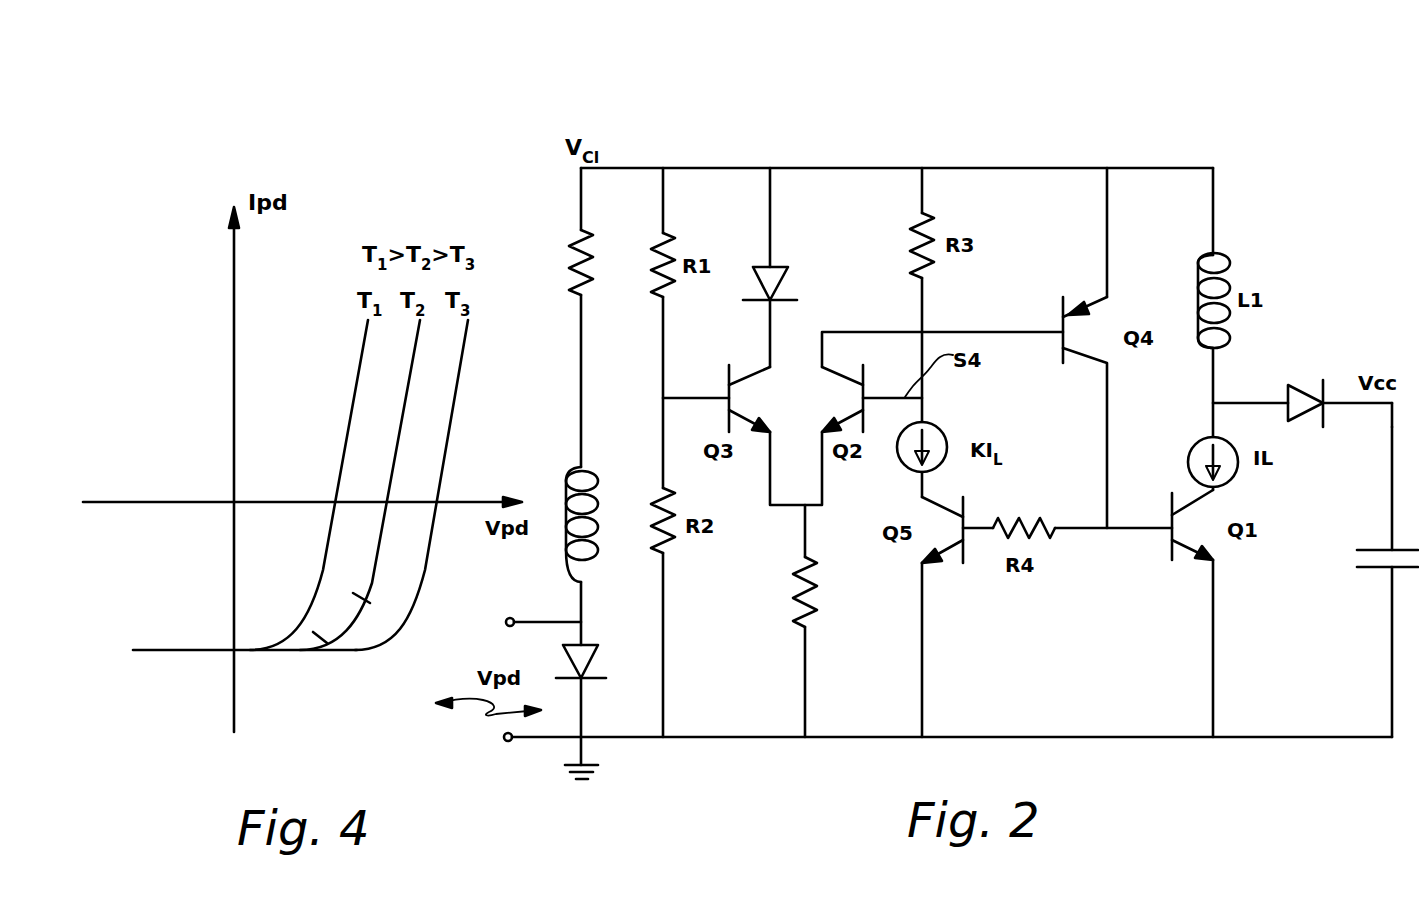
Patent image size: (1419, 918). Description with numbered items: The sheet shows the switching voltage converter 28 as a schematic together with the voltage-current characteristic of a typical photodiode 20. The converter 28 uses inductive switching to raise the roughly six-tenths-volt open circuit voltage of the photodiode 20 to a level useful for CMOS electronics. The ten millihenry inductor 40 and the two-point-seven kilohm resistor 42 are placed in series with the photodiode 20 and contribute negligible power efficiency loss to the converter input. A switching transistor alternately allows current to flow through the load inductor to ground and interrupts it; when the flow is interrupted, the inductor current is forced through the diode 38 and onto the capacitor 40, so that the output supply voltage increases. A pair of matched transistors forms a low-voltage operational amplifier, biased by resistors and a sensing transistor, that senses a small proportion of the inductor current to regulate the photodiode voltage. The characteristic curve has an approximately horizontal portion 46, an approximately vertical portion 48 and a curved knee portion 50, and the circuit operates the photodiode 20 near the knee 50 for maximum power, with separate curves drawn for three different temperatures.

In FIG. 2, the photodiode 20 is at (592, 663).
In FIG. 2, the switching voltage converter 28 is at (1192, 144).
In FIG. 2, the diode 38 is at (1303, 397).
In FIG. 2, the inductor / capacitor 40 is at (597, 477).
In FIG. 2, the resistor 42 is at (588, 277).
In FIG. 4, the horizontal portion 46 is at (157, 652).
In FIG. 4, the vertical portion 48 is at (398, 435).
In FIG. 4, the knee portion 50 is at (343, 623).